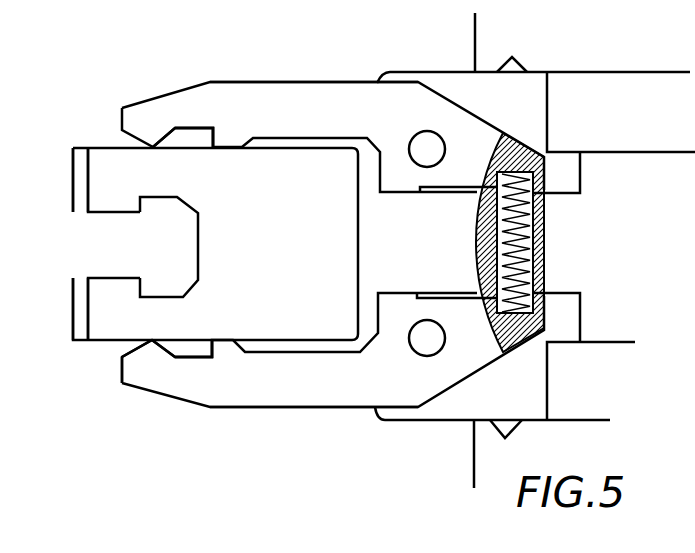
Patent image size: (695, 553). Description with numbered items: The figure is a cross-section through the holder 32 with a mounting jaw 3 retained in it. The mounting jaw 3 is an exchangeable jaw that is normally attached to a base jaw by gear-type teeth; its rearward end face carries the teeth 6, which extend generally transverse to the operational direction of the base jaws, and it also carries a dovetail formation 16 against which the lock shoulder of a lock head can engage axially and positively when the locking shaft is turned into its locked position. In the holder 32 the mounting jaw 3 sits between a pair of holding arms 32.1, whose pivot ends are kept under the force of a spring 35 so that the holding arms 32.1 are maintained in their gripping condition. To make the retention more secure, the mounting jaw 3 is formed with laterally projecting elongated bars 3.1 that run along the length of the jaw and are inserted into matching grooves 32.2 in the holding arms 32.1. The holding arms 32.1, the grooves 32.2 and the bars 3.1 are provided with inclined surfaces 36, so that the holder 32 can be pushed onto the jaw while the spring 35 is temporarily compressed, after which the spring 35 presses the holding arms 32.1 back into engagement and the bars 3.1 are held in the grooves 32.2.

The mounting jaw 3 is at (289, 253).
The laterally projecting elongated bar 3.1 is at (188, 132).
The teeth 6 is at (82, 197).
The dovetail formation 16 is at (148, 210).
The holder 32 is at (143, 90).
The holding arm 32.1 is at (308, 93).
The groove 32.2 is at (193, 127).
The spring 35 is at (530, 220).
The inclined surface 36 is at (168, 353).